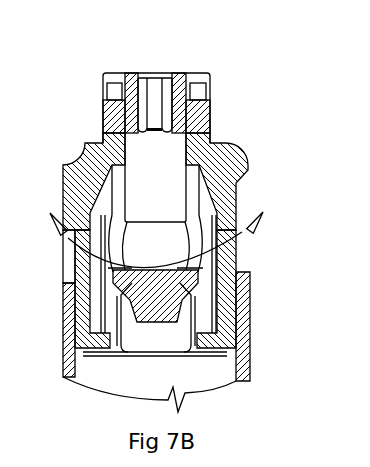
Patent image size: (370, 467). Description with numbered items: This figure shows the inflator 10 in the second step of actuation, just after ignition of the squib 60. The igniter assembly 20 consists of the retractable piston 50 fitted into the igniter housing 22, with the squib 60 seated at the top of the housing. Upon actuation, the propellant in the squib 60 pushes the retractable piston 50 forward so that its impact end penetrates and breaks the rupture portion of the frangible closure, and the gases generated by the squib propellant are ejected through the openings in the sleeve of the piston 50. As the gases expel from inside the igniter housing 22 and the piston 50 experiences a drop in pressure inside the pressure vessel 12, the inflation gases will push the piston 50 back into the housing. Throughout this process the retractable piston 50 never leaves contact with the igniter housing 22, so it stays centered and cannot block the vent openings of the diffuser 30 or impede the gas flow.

The inflator 10 is at (138, 368).
The pressure vessel 12 is at (250, 360).
The igniter assembly 20 is at (170, 157).
The igniter housing 22 is at (97, 173).
The diffuser 30 is at (250, 152).
The retractable piston 50 is at (187, 290).
The squib 60 is at (148, 80).